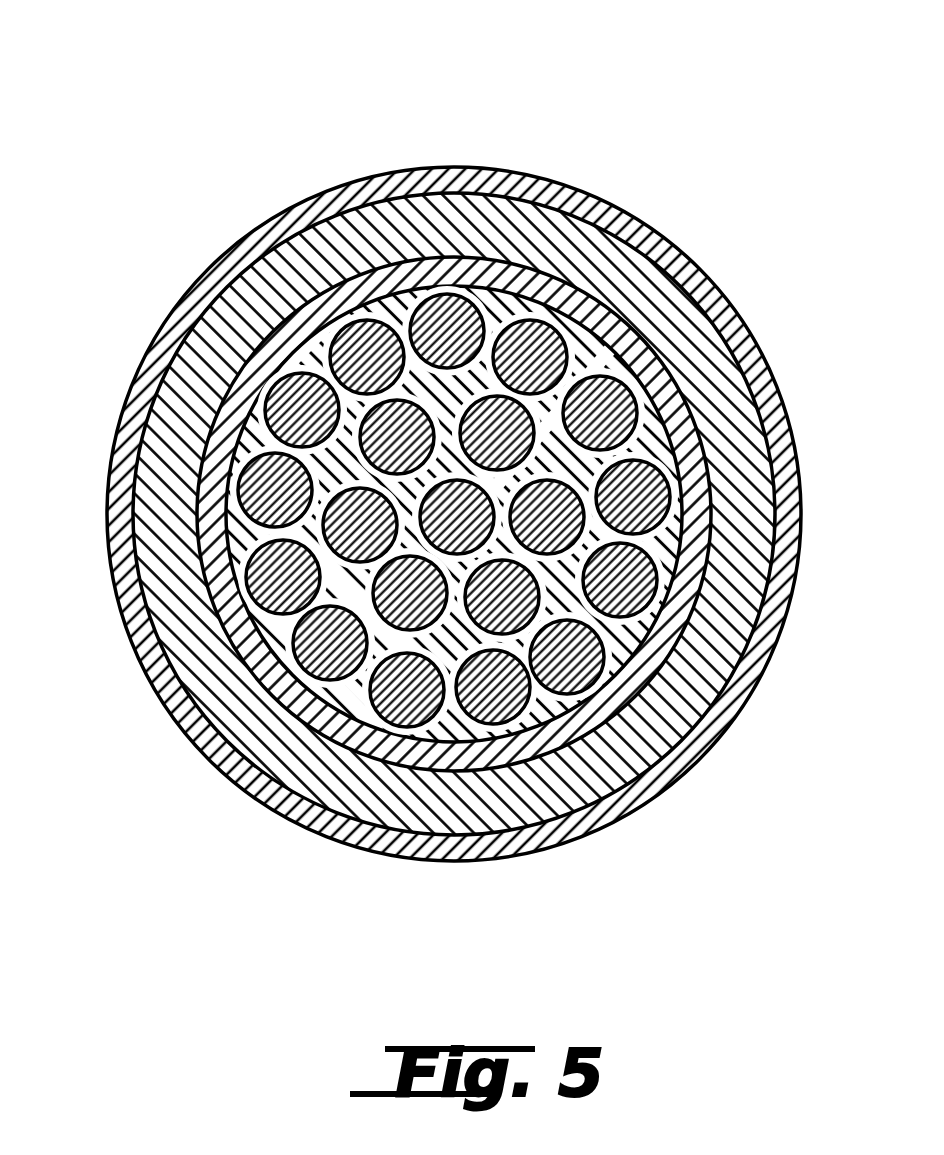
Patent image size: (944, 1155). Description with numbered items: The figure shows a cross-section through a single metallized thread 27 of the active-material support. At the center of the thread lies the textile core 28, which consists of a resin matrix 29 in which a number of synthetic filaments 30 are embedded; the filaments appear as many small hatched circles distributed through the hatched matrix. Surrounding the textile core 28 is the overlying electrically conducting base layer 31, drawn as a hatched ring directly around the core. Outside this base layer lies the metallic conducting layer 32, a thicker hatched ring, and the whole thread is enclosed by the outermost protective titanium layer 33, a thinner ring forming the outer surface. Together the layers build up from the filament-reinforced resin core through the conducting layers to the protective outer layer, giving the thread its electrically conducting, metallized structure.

The metallized thread 27 is at (603, 157).
The textile core 28 is at (648, 366).
The resin matrix 29 is at (640, 445).
The synthetic filaments 30 is at (660, 500).
The electrically conducting base layer 31 is at (317, 317).
The metallic conducting layer 32 is at (237, 320).
The protective titanium layer 33 is at (160, 353).